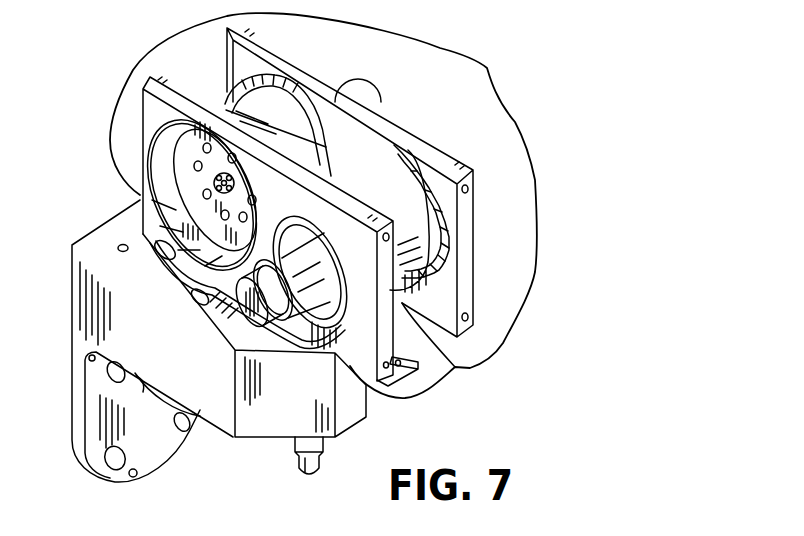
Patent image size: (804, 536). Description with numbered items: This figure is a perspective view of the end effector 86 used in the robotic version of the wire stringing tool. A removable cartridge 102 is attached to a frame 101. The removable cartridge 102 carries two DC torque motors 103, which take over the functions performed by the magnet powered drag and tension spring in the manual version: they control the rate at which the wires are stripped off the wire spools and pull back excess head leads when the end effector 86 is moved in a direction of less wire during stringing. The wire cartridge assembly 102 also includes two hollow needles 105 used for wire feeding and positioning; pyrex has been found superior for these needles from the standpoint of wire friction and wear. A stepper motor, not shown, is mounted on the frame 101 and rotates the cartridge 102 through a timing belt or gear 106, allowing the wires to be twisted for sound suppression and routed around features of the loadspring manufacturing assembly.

The end effector 86 is at (590, 223).
The frame 101 is at (230, 438).
The removable cartridge 102 is at (516, 121).
The DC torque motor 103 is at (379, 92).
The hollow needle 105 is at (320, 455).
The timing belt or gear 106 is at (455, 367).